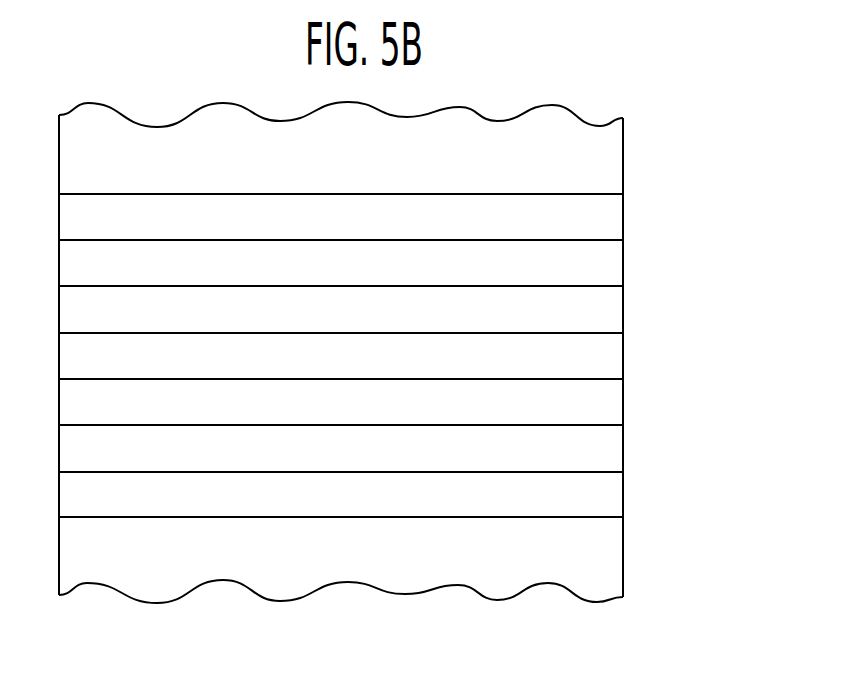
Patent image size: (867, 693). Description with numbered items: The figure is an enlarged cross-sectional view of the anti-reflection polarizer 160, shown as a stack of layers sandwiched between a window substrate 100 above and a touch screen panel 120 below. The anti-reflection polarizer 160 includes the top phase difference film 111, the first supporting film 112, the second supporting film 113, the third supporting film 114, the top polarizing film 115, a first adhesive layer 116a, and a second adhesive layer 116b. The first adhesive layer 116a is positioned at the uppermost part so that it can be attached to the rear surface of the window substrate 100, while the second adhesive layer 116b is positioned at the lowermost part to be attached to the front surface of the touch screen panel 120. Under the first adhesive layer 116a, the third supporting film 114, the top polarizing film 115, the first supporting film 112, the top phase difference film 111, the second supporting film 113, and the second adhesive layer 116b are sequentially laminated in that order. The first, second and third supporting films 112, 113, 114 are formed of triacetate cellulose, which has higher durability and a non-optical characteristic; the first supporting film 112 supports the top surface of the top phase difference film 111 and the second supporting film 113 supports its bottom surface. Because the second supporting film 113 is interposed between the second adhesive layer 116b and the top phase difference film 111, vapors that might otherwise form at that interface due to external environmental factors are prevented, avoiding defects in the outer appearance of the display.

The window substrate 100 is at (624, 155).
The first adhesive layer 116a is at (624, 220).
The third supporting film 114 is at (624, 265).
The top polarizing film 115 is at (624, 313).
The first supporting film 112 is at (624, 358).
The top phase difference film 111 is at (624, 405).
The second supporting film 113 is at (624, 452).
The second adhesive layer 116b is at (380, 494).
The touch screen panel 120 is at (624, 556).
The anti-reflection polarizer 160 is at (407, 355).